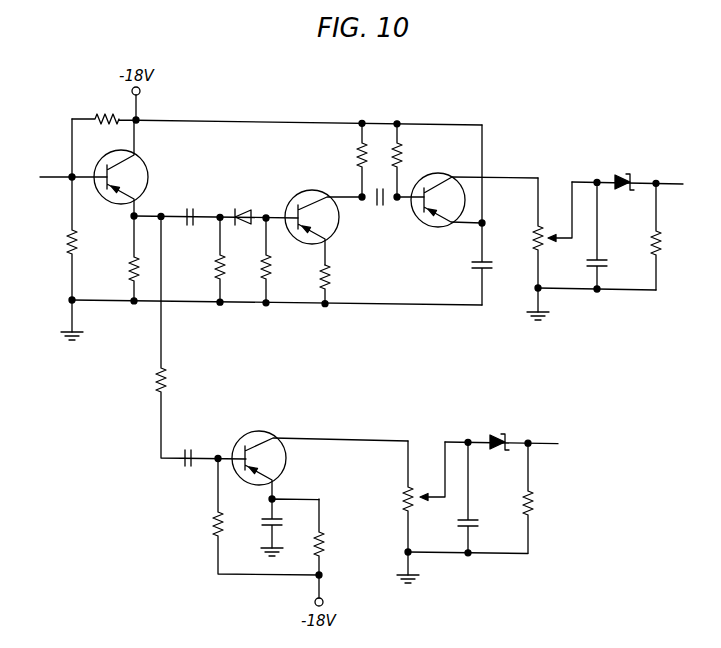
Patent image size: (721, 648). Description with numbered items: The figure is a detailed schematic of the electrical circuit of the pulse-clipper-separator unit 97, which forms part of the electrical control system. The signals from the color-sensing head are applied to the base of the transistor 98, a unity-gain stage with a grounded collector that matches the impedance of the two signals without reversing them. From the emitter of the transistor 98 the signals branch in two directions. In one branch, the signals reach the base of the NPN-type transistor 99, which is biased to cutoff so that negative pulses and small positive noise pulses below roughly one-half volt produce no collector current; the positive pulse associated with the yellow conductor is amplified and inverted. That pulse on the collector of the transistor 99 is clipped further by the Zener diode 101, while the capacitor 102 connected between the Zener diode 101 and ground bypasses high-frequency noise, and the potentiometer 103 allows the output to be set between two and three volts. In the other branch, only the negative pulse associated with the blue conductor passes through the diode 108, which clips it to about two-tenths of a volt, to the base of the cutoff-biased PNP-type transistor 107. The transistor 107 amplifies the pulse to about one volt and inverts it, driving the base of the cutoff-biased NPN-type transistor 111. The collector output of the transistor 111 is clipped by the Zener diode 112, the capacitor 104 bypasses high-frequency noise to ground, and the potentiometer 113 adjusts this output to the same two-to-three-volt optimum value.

The pulse-clipper-separator unit 97 is at (588, 94).
The transistor 98 is at (147, 166).
The NPN-type transistor 99 is at (250, 430).
The Zener diode 101 is at (496, 436).
The capacitor 102 is at (493, 527).
The potentiometer 103 is at (398, 497).
The capacitor 104 is at (604, 264).
The transistor 107 is at (336, 238).
The diode 108 is at (247, 207).
The NPN-type transistor 111 is at (438, 226).
The Zener diode 112 is at (623, 172).
The potentiometer 113 is at (527, 235).